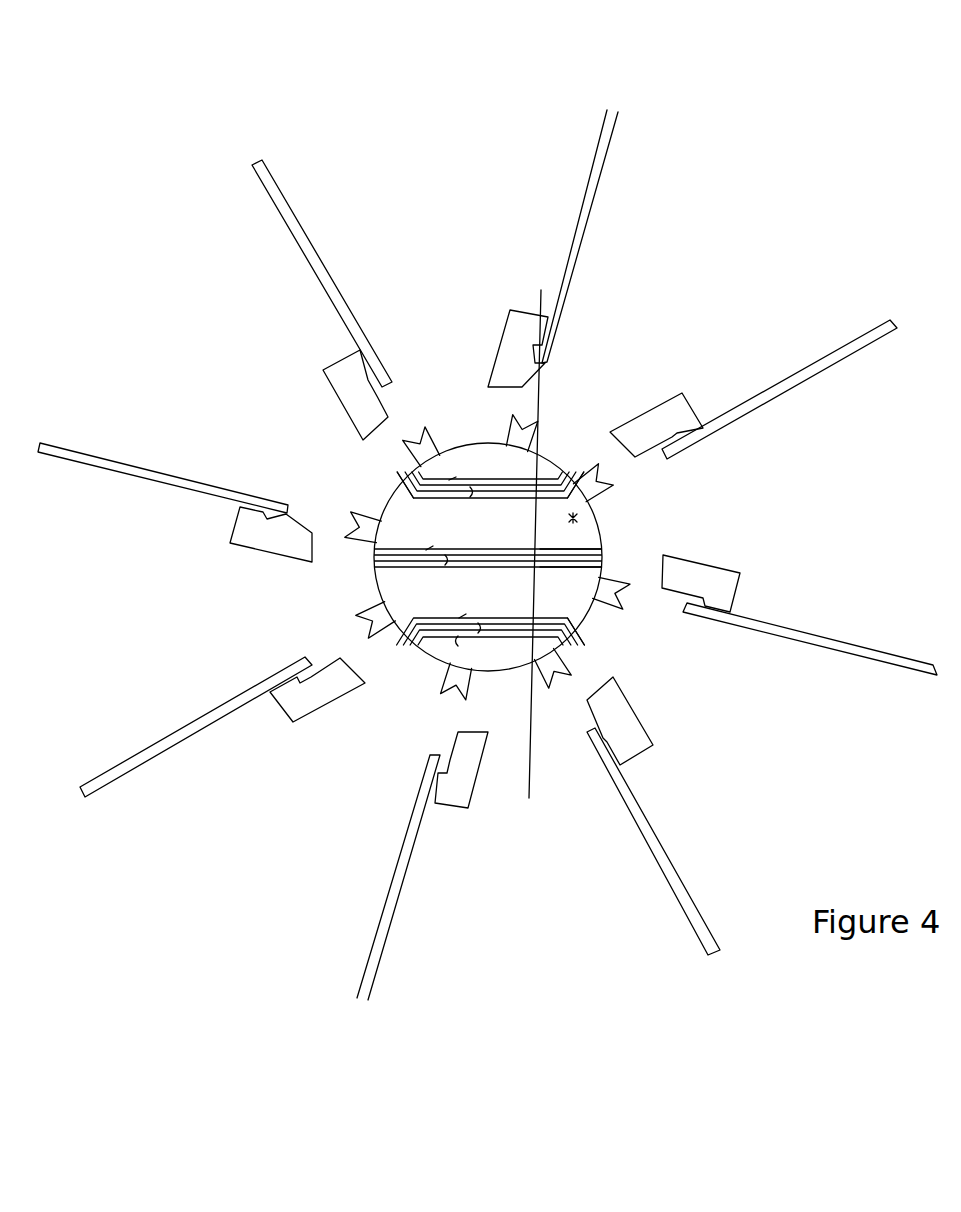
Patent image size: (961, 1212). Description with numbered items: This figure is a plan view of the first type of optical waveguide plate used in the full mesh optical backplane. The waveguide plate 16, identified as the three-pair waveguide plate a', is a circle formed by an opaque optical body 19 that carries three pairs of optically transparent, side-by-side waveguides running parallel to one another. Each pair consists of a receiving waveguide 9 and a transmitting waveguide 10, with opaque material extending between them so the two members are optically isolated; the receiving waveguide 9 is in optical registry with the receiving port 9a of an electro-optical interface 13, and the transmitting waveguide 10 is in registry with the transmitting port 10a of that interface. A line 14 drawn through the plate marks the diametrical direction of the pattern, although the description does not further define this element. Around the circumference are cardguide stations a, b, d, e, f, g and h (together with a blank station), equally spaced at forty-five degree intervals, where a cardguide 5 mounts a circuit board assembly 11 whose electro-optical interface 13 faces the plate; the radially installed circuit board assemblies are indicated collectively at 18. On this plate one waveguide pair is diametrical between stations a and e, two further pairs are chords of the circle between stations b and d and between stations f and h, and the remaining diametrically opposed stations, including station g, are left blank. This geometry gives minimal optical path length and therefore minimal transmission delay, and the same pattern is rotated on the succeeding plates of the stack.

The cardguide 5 is at (356, 622).
The receiving waveguide 9 is at (570, 548).
The receiving port 9a is at (567, 478).
The transmitting waveguide 10 is at (553, 567).
The transmitting port 10a is at (403, 474).
The circuit board assembly 11 is at (155, 480).
The electro-optical interface 13 is at (253, 532).
The axis line 14 is at (541, 290).
The waveguide plate 16 is at (583, 612).
The radially installed circuit board assemblies 18 is at (421, 550).
The opaque optical body 19 is at (578, 516).
The cardguide station a is at (611, 573).
The three-pair waveguide plate a' is at (482, 413).
The cardguide station b is at (592, 476).
The cardguide station d is at (408, 458).
The cardguide station e is at (361, 543).
The cardguide station f is at (376, 631).
The cardguide station g is at (470, 691).
The cardguide station h is at (565, 660).